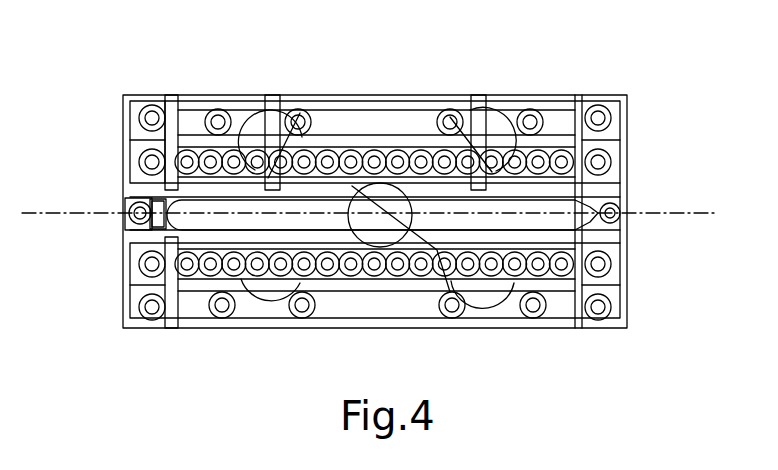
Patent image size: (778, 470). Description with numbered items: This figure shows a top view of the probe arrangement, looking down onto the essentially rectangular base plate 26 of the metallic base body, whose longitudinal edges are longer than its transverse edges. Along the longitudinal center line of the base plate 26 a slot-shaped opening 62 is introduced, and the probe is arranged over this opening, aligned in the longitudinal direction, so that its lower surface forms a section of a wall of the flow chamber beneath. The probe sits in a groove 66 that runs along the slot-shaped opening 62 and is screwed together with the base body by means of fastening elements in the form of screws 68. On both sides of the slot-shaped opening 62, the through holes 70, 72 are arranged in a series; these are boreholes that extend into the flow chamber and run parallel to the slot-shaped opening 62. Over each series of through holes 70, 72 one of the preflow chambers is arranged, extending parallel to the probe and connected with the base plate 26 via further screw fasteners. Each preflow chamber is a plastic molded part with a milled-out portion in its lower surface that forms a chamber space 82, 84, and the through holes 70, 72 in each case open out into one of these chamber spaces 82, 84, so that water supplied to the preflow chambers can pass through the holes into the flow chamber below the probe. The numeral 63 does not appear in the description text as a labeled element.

The base plate 26 is at (622, 118).
The chamber space 84 is at (349, 128).
The chamber space 82 is at (327, 300).
The through holes 72 is at (187, 148).
The through holes 70 is at (192, 287).
The slot-shaped opening 62 is at (547, 205).
The axis of rotation 63 is at (693, 212).
The groove 66 is at (125, 192).
The screws 68 is at (125, 228).